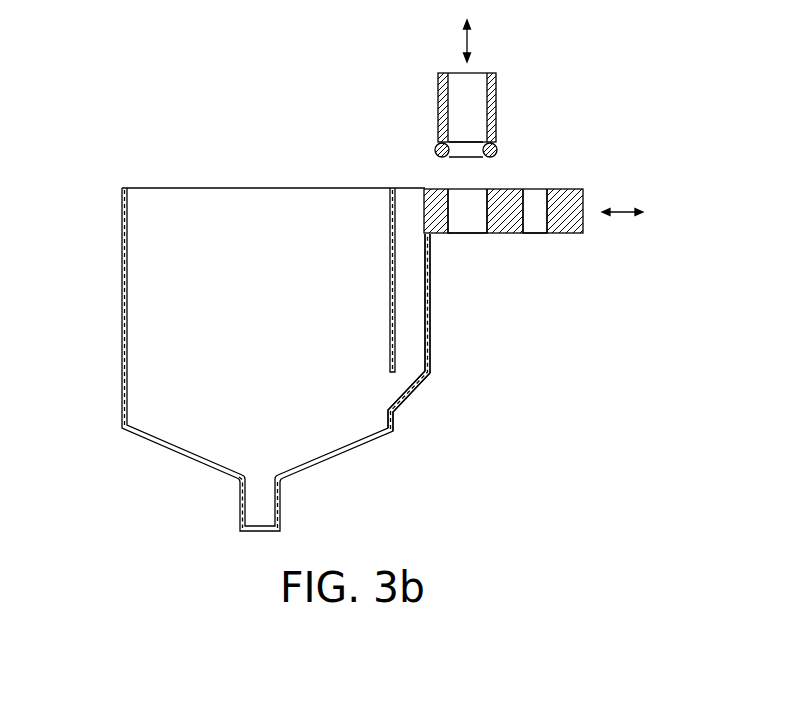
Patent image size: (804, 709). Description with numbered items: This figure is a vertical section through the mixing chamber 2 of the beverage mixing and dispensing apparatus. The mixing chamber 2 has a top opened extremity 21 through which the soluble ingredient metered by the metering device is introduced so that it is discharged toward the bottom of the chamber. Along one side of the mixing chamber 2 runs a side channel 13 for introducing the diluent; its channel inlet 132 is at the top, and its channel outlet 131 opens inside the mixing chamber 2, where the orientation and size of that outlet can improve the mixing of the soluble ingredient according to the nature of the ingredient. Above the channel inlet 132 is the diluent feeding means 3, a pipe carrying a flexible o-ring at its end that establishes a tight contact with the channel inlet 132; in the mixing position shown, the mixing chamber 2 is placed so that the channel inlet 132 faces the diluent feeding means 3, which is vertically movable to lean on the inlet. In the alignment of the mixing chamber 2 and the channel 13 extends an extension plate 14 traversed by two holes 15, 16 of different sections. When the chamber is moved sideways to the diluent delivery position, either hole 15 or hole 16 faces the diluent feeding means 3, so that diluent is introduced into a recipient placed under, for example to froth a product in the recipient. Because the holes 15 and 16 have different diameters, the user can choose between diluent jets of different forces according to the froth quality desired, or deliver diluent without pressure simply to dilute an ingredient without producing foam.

The mixing chamber 2 is at (122, 248).
The top opened extremity 21 is at (258, 198).
The channel inlet 132 is at (410, 200).
The side channel 13 is at (415, 312).
The channel outlet 131 is at (392, 388).
The extension plate 14 is at (583, 198).
The hole 15 is at (463, 235).
The hole 16 is at (530, 235).
The diluent feeding means 3 is at (437, 90).